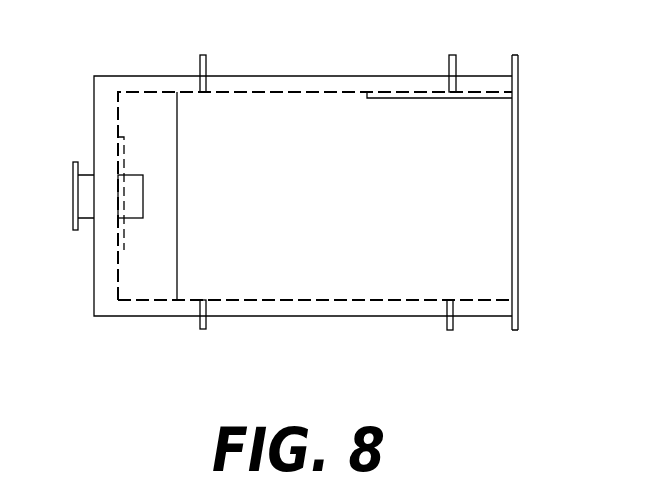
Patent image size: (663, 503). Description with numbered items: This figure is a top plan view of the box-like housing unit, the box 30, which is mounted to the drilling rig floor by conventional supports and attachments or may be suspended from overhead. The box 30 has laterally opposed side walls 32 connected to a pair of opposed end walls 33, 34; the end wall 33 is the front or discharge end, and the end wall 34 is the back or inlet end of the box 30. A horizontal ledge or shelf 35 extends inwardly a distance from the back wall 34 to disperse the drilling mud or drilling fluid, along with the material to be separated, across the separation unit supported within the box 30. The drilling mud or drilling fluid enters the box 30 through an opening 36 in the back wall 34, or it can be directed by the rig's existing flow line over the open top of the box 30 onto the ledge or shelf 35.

The box 30 is at (346, 322).
The side walls 32 is at (335, 93).
The end wall 33 is at (518, 187).
The end wall 34 is at (120, 118).
The ledge or shelf 35 is at (153, 285).
The opening 36 is at (120, 172).